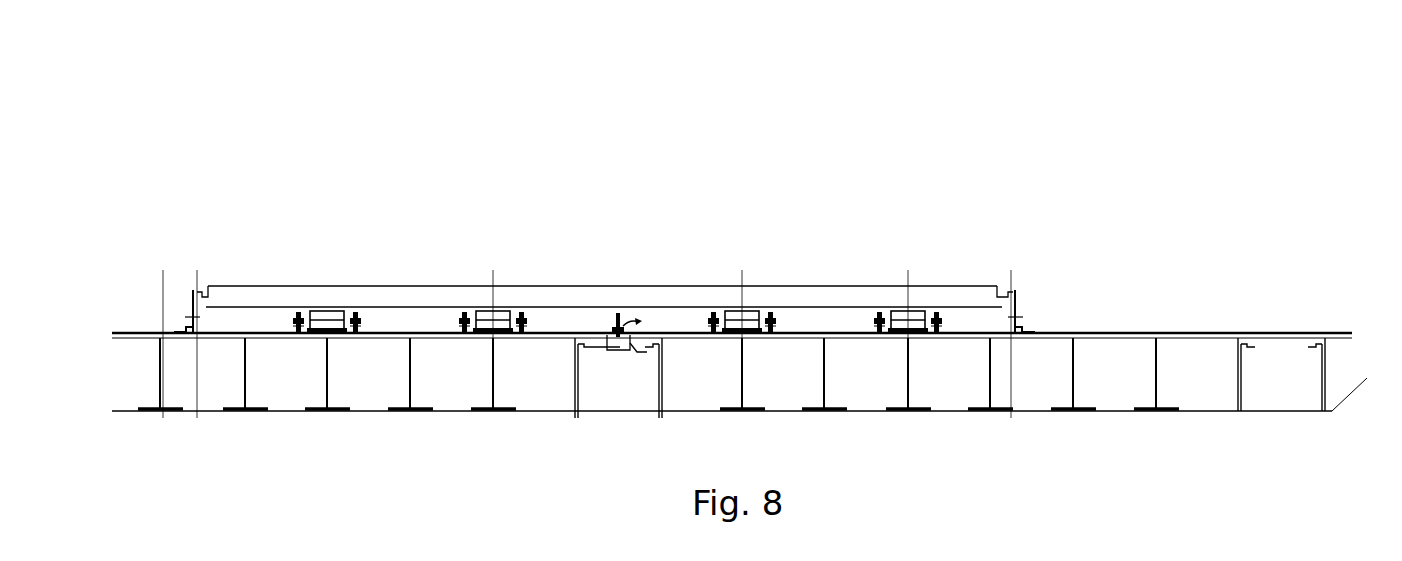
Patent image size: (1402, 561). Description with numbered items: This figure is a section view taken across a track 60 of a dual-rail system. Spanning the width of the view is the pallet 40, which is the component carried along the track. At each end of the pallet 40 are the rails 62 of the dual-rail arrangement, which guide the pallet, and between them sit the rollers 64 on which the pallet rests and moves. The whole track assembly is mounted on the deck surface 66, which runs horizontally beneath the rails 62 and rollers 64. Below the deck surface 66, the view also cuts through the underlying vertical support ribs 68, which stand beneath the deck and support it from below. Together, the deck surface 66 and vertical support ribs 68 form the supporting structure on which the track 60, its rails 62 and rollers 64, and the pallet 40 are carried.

The track 60 is at (316, 103).
The pallet 40 is at (663, 290).
The rails 62 is at (187, 307).
The rollers 64 is at (322, 312).
The deck surface 66 is at (1090, 335).
The vertical support ribs 68 is at (1240, 373).